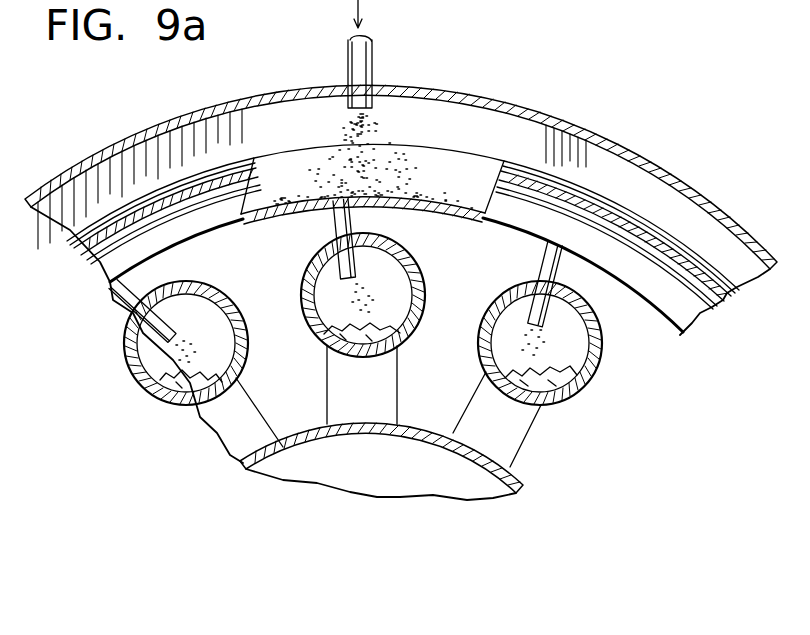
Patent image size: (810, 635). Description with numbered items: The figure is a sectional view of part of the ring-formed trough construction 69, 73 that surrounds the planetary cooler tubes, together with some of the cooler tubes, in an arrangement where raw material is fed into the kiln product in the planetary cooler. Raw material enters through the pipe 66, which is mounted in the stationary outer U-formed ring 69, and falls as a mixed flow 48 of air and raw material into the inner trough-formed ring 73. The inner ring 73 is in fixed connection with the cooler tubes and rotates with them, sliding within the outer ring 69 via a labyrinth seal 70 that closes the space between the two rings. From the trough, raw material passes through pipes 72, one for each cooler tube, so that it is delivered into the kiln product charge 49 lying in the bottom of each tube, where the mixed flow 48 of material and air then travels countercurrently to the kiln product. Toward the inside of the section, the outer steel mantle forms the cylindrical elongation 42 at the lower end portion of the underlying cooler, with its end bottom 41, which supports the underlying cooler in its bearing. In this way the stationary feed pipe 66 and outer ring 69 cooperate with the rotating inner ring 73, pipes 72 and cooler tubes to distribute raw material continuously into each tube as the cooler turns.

The end bottom 41 is at (388, 478).
The cylindrical elongation 42 is at (523, 468).
The mixed flow of air and raw material 48 is at (368, 130).
The kiln product charge 49 is at (396, 320).
The pipe 66 is at (358, 60).
The stationary outer U-formed ring 69 is at (553, 146).
The labyrinth seal 70 is at (566, 193).
The pipes 72 is at (333, 221).
The inner trough-formed ring 73 is at (407, 174).